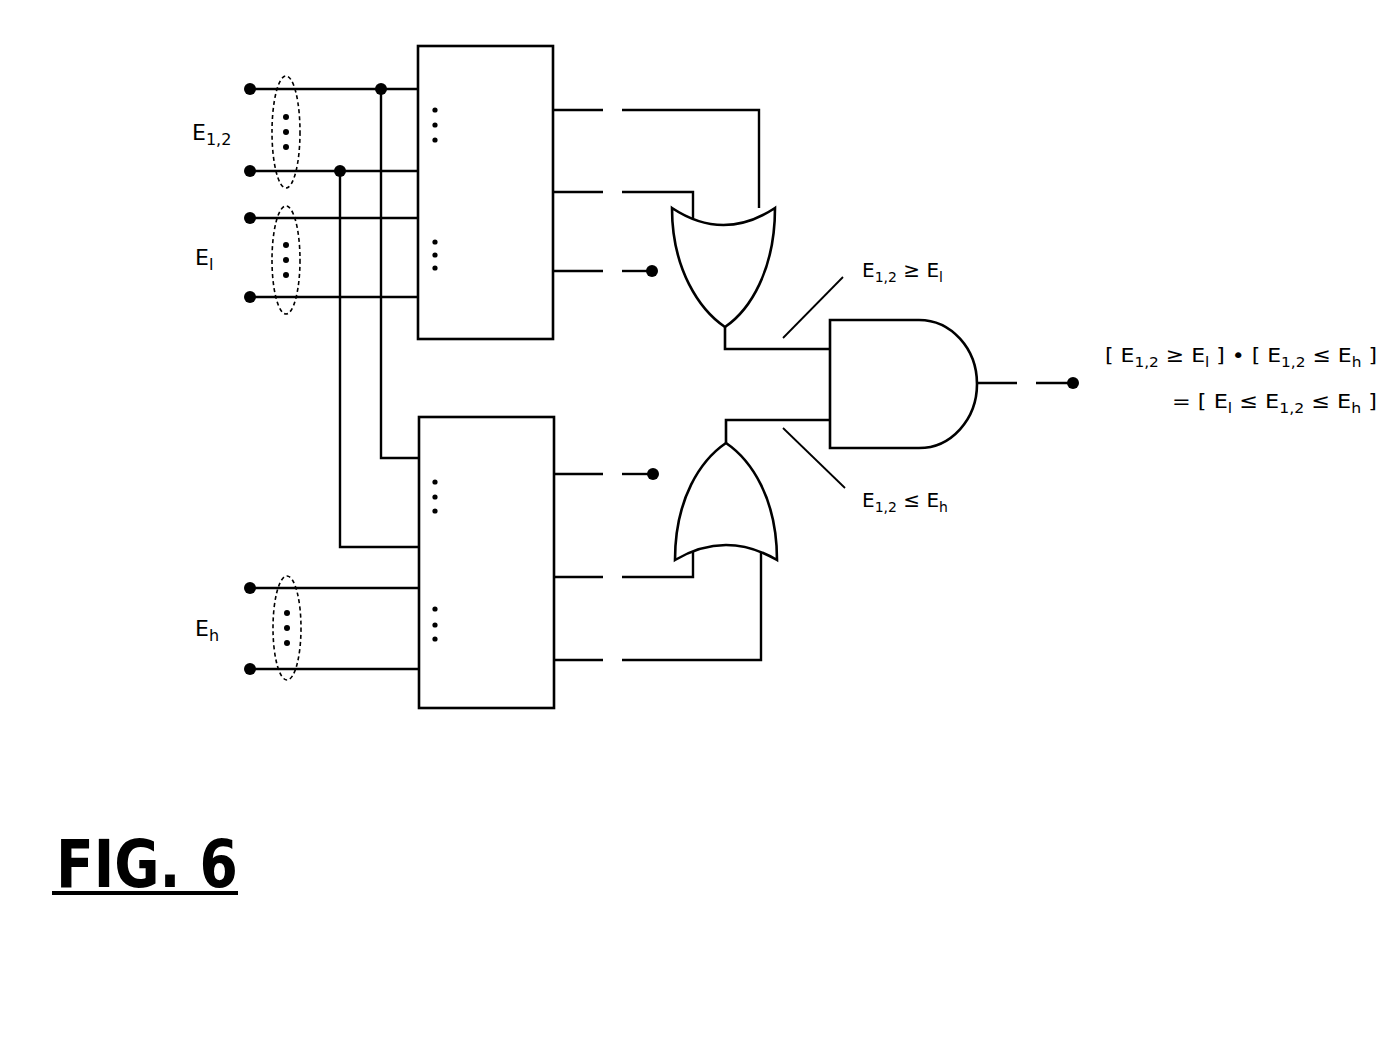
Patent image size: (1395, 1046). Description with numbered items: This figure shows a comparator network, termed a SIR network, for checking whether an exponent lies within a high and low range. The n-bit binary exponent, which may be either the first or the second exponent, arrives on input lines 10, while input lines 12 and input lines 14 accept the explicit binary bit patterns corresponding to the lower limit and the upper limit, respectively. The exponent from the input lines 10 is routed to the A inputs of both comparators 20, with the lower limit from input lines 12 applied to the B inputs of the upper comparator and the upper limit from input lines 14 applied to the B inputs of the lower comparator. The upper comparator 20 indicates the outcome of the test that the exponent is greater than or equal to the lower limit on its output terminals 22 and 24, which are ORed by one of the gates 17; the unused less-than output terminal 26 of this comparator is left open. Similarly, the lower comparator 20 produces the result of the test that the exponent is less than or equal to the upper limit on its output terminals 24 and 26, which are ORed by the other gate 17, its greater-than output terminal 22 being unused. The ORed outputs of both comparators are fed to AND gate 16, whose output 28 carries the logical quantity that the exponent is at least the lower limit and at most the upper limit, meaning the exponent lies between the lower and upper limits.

The input lines 10 is at (289, 73).
The input lines 12 is at (282, 318).
The input lines 14 is at (286, 683).
The AND gate 16 is at (903, 384).
The OR gates 17 is at (751, 384).
The comparators 20 is at (498, 377).
The output terminal 22 is at (656, 293).
The output terminal 24 is at (623, 385).
The output terminal 26 is at (657, 466).
The output 28 is at (1028, 384).